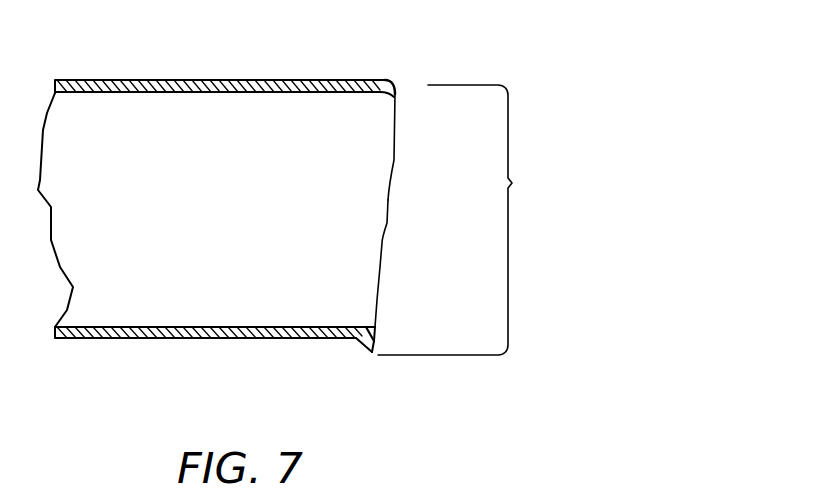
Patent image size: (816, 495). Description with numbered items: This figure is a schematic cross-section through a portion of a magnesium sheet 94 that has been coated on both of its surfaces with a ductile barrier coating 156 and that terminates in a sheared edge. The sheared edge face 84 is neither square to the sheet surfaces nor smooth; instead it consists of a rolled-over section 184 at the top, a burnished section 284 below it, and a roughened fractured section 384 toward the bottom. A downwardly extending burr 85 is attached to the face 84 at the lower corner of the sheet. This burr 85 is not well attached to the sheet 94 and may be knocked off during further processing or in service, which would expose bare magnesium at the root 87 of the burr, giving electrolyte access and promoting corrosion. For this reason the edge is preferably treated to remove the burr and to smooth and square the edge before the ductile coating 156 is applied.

The sheared edge face 84 is at (512, 183).
The burr 85 is at (383, 335).
The root of the burr 87 is at (357, 340).
The sheet 94 is at (226, 219).
The ductile barrier coating 156 is at (168, 80).
The rolled-over section 184 is at (398, 88).
The burnished section 284 is at (397, 162).
The roughened fractured section 384 is at (383, 243).